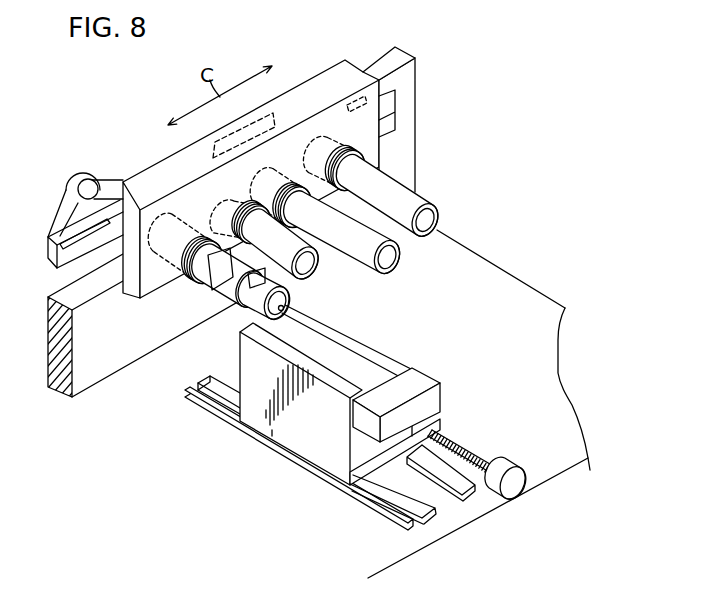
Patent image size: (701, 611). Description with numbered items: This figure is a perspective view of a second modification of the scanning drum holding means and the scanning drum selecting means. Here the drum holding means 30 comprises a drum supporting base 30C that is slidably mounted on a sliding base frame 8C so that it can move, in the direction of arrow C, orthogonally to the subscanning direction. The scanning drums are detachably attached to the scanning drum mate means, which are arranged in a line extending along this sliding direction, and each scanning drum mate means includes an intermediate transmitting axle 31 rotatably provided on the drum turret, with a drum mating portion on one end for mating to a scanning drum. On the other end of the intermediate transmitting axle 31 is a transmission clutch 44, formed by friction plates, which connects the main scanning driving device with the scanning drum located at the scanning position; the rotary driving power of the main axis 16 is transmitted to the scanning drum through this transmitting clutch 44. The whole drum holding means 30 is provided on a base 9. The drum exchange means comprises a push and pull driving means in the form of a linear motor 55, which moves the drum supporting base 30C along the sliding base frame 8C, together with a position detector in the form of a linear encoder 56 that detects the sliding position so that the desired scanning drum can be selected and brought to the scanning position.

The drum supporting base 30C is at (302, 154).
The drum holding means 30 is at (302, 154).
The linear encoder 56 is at (396, 74).
The sliding base frame 8C is at (418, 128).
The linear motor 55 is at (265, 134).
The main axis 16 is at (102, 184).
The transmission clutch 44 is at (165, 214).
The intermediate transmitting axle 31 is at (168, 258).
The base 9 is at (507, 278).